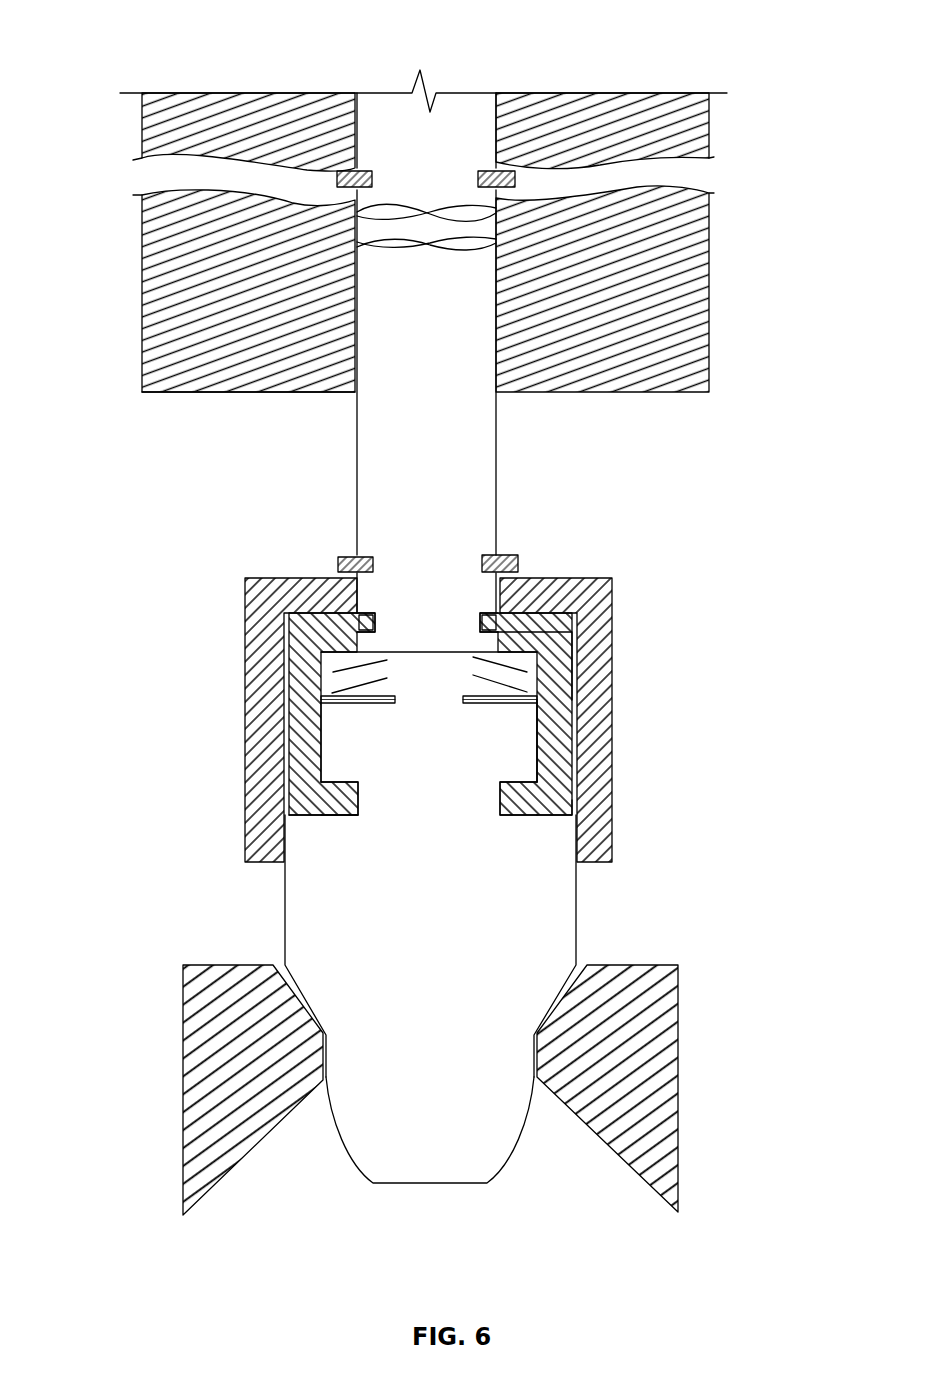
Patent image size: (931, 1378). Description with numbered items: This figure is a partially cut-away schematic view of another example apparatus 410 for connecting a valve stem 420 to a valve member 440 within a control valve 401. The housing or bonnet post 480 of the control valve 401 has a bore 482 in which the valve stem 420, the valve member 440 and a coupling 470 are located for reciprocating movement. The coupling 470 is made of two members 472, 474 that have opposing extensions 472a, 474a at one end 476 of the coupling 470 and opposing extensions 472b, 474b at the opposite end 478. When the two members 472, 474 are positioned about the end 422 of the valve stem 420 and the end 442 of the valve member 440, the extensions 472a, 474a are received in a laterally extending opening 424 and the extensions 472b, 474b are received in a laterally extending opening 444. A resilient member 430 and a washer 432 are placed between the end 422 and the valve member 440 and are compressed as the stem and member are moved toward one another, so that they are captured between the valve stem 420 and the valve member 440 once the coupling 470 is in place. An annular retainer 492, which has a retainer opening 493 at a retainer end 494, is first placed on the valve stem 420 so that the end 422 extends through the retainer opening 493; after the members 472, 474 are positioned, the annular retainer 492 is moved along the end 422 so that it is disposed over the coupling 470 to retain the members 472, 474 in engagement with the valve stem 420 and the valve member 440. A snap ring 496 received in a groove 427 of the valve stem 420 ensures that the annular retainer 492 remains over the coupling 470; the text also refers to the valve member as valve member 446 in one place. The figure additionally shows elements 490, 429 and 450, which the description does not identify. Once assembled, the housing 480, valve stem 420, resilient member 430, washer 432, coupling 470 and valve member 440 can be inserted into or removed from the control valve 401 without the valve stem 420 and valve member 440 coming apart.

The apparatus 410 is at (147, 42).
The housing or bonnet post 480 is at (697, 300).
The bore 482 is at (218, 395).
The valve stem 420 is at (458, 300).
The seal 490 is at (333, 175).
The seal ring 429 is at (360, 168).
The control valve 401 is at (155, 940).
The snap ring 496 is at (335, 545).
The retainer opening 493 is at (506, 555).
The annular retainer 492 is at (267, 752).
The retainer end 494 is at (590, 578).
The member of the coupling 472 is at (300, 637).
The member of the coupling 474 is at (583, 712).
The extension 472a is at (367, 623).
The extension 474a is at (484, 618).
The laterally extending opening 424 is at (367, 612).
The groove 427 is at (490, 553).
The extension 472b is at (347, 805).
The extension 474b is at (512, 805).
The end of the coupling 476 is at (555, 658).
The coupling 470 is at (560, 762).
The laterally extending opening 444 is at (580, 808).
The opposite end of the coupling 478 is at (327, 827).
The resilient member 430 is at (500, 677).
The end of the valve stem 422 is at (440, 637).
The washer 432 is at (505, 705).
The end of the valve member 442 is at (429, 742).
The valve member 440 is at (560, 915).
The valve member 446 is at (507, 1133).
The nozzle block 450 is at (680, 1017).